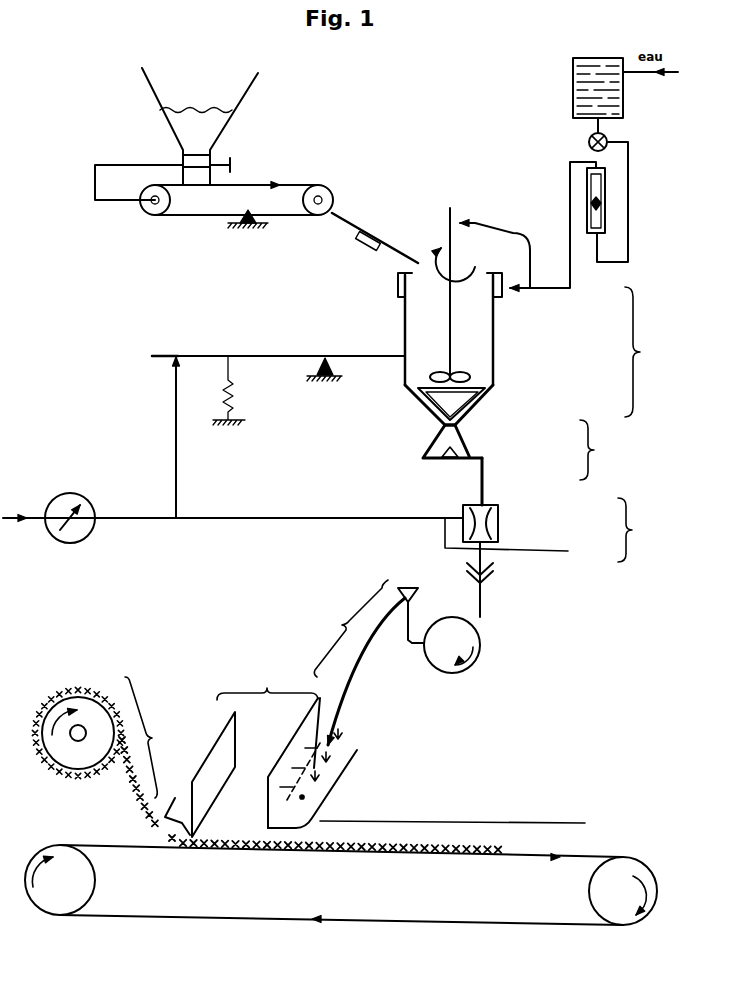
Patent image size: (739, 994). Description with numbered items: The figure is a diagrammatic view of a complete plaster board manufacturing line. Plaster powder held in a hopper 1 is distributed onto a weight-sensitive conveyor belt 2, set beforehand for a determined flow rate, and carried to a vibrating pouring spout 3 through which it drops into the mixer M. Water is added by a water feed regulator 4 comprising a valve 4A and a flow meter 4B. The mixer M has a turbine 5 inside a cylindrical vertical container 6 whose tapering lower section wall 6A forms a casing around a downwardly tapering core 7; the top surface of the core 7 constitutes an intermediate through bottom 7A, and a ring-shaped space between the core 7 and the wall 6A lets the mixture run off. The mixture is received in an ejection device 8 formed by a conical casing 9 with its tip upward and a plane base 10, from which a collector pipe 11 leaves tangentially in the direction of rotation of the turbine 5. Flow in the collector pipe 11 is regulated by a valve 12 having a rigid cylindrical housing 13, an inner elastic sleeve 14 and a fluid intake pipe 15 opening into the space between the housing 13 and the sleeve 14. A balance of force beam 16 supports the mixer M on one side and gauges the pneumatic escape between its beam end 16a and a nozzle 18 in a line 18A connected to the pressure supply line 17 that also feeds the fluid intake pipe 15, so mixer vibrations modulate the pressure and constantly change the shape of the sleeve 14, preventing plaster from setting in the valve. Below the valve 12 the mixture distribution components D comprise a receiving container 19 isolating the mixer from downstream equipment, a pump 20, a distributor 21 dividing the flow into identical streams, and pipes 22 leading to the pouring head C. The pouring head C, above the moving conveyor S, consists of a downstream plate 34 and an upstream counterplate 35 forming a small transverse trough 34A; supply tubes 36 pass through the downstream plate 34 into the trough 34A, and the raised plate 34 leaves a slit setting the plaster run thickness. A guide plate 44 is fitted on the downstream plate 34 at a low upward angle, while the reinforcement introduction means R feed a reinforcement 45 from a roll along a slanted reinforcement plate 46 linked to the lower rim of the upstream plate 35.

The hopper 1 is at (227, 127).
The weight-sensitive conveyor belt 2 is at (298, 183).
The vibrating pouring spout 3 is at (353, 222).
The water feed regulator 4 is at (607, 203).
The valve 4A is at (608, 137).
The flow meter 4B is at (607, 177).
The turbine 5 is at (466, 371).
The cylindrical vertical container 6 is at (495, 372).
The tapering lower section wall 6A is at (423, 410).
The solid of revolution core 7 is at (458, 398).
The intermediate through bottom 7A is at (478, 388).
The ejection device 8 is at (593, 450).
The conical casing 9 is at (463, 433).
The plane base 10 is at (458, 448).
The collector pipe 11 is at (485, 470).
The valve 12 is at (637, 530).
The rigid cylindrical housing 13 is at (502, 513).
The inner elastic sleeve 14 is at (500, 525).
The fluid intake pipe 15 is at (518, 540).
The balance of force beam 16 is at (265, 353).
The beam end 16a is at (163, 350).
The pressure supply line 17 is at (133, 520).
The nozzle 18 is at (173, 360).
The line 18A is at (176, 490).
The receiving container 19 is at (487, 580).
The pump 20 is at (482, 648).
The distributor 21 is at (413, 585).
The pipes 22 is at (352, 675).
The downstream plate 34 is at (277, 808).
The small trough 34A is at (240, 812).
The upstream counterplate 35 is at (200, 808).
The supply tubes 36 is at (302, 797).
The guide plate 44 is at (350, 763).
The reinforcement 45 is at (128, 788).
The reinforcement plate 46 is at (180, 823).
The mixer M is at (643, 352).
The pouring head C is at (267, 682).
The mixture distribution components D is at (351, 628).
The reinforcement introduction means R is at (146, 737).
The conveyor S is at (450, 855).